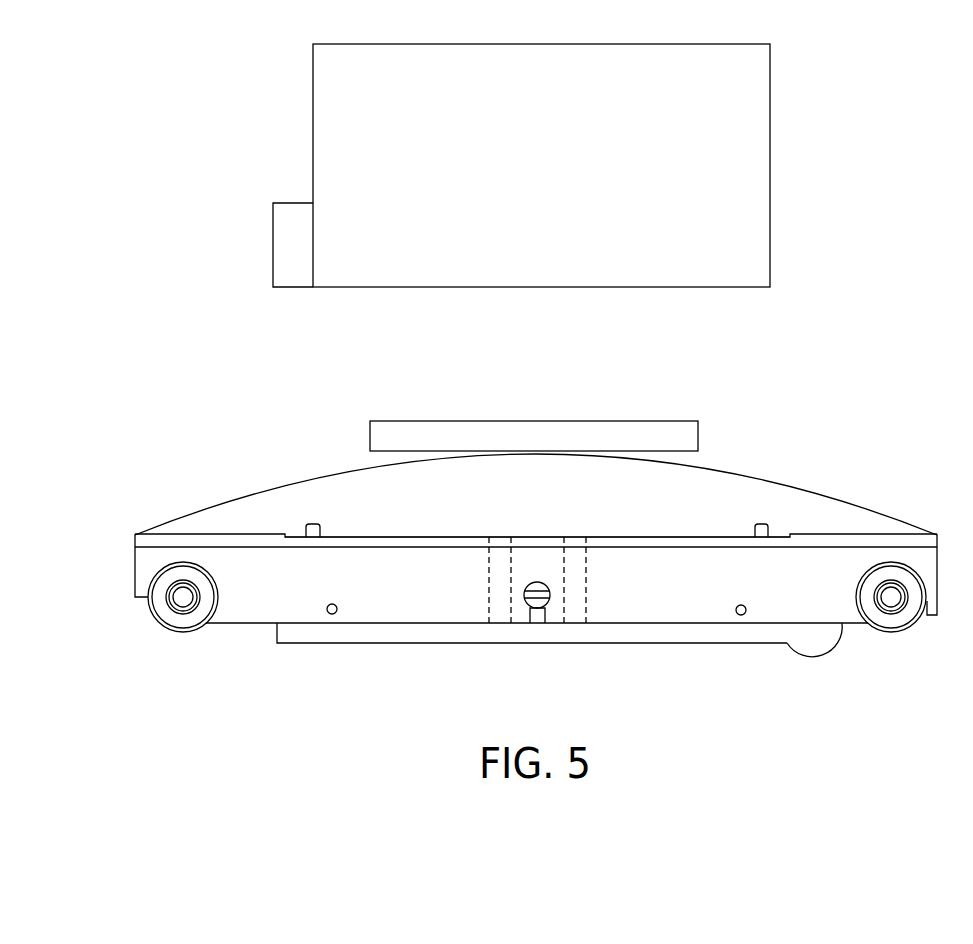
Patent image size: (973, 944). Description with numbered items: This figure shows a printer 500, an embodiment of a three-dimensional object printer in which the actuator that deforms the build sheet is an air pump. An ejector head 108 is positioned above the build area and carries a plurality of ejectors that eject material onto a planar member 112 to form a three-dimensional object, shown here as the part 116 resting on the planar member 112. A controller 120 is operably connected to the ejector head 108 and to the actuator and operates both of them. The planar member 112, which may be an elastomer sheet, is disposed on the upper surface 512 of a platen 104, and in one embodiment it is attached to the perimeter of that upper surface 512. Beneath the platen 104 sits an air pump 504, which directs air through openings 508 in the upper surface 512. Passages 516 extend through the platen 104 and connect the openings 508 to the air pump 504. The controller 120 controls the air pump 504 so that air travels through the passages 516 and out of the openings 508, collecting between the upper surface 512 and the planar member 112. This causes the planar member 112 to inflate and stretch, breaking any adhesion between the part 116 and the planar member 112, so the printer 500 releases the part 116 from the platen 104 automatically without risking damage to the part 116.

The printer 500 is at (212, 116).
The ejector head 108 is at (750, 145).
The controller 120 is at (286, 245).
The part 116 is at (639, 430).
The planar member 112 is at (822, 497).
The platen 104 is at (252, 602).
The air pump 504 is at (808, 642).
The upper surface 512 is at (459, 535).
The openings 508 is at (499, 542).
The passages 516 is at (498, 592).